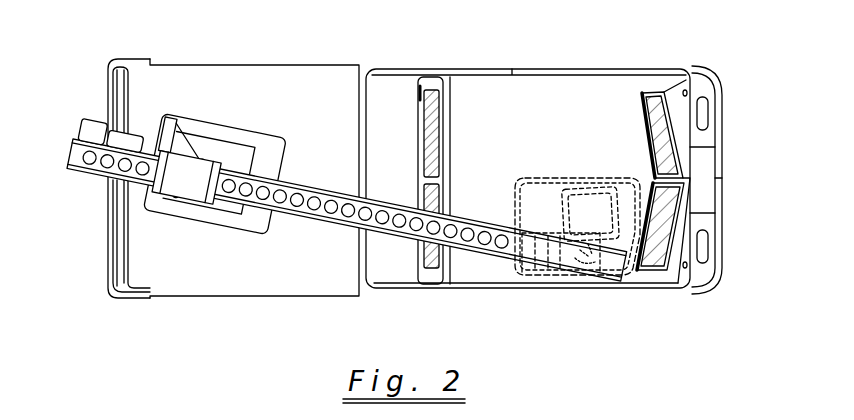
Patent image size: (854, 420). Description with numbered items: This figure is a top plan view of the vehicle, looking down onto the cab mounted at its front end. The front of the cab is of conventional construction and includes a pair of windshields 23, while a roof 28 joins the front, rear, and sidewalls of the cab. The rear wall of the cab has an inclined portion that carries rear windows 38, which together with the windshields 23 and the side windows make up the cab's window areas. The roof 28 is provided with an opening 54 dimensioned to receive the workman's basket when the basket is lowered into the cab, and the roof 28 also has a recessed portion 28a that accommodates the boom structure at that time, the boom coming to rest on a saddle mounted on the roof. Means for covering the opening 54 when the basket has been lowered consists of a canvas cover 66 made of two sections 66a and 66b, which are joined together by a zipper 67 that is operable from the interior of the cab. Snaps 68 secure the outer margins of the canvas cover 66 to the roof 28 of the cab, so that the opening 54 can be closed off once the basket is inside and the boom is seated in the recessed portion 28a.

The windshields 23 is at (672, 198).
The roof 28 is at (528, 178).
The recessed portion 28a is at (478, 272).
The rear windows 38 is at (428, 92).
The opening 54 is at (650, 270).
The canvas cover 66 is at (551, 241).
The cover section 66a is at (538, 192).
The cover section 66b is at (565, 267).
The zipper 67 is at (553, 236).
The snaps 68 is at (592, 188).